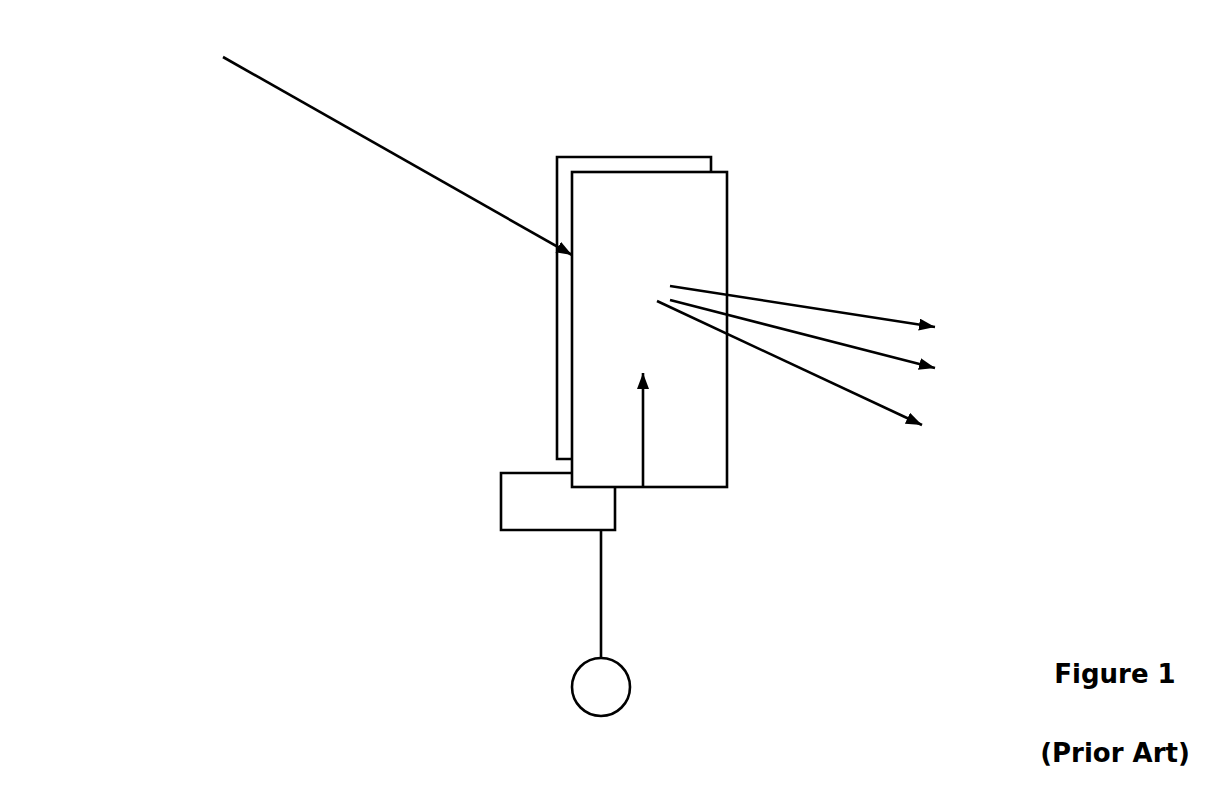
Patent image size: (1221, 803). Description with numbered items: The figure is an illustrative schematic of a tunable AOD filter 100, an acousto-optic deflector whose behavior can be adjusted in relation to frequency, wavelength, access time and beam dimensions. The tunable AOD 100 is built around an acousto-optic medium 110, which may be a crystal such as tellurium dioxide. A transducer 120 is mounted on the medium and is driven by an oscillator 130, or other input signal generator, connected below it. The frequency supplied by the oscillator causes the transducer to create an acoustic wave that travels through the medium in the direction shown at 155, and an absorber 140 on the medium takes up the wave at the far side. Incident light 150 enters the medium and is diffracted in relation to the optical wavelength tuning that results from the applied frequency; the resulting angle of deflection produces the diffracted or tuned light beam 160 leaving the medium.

The tunable AOD filter 100 is at (1114, 53).
The acousto-optic medium 110 is at (708, 487).
The transducer 120 is at (530, 530).
The oscillator 130 is at (601, 716).
The absorber 140 is at (592, 157).
The incident light 150 is at (292, 96).
The acoustic wave direction 155 is at (643, 443).
The diffracted light beam 160 is at (918, 425).